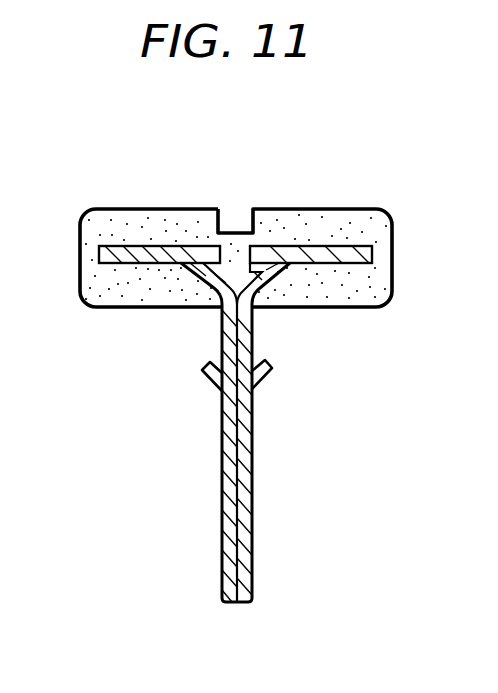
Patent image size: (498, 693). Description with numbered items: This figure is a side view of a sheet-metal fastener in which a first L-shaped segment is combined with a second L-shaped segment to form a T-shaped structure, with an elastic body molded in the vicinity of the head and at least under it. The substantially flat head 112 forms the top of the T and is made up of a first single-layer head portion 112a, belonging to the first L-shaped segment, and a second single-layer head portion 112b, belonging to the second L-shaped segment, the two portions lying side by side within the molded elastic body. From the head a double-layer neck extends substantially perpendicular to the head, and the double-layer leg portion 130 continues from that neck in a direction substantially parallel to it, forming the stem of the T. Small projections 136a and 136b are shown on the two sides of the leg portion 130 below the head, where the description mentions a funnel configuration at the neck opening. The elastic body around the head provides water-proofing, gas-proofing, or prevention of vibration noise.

The substantially flat head 112 is at (284, 245).
The first single-layer head portion 112a is at (345, 255).
The second single-layer head portion 112b is at (125, 253).
The double-layer leg portion 130 is at (252, 478).
The right barb 136a is at (268, 380).
The left barb 136b is at (208, 385).